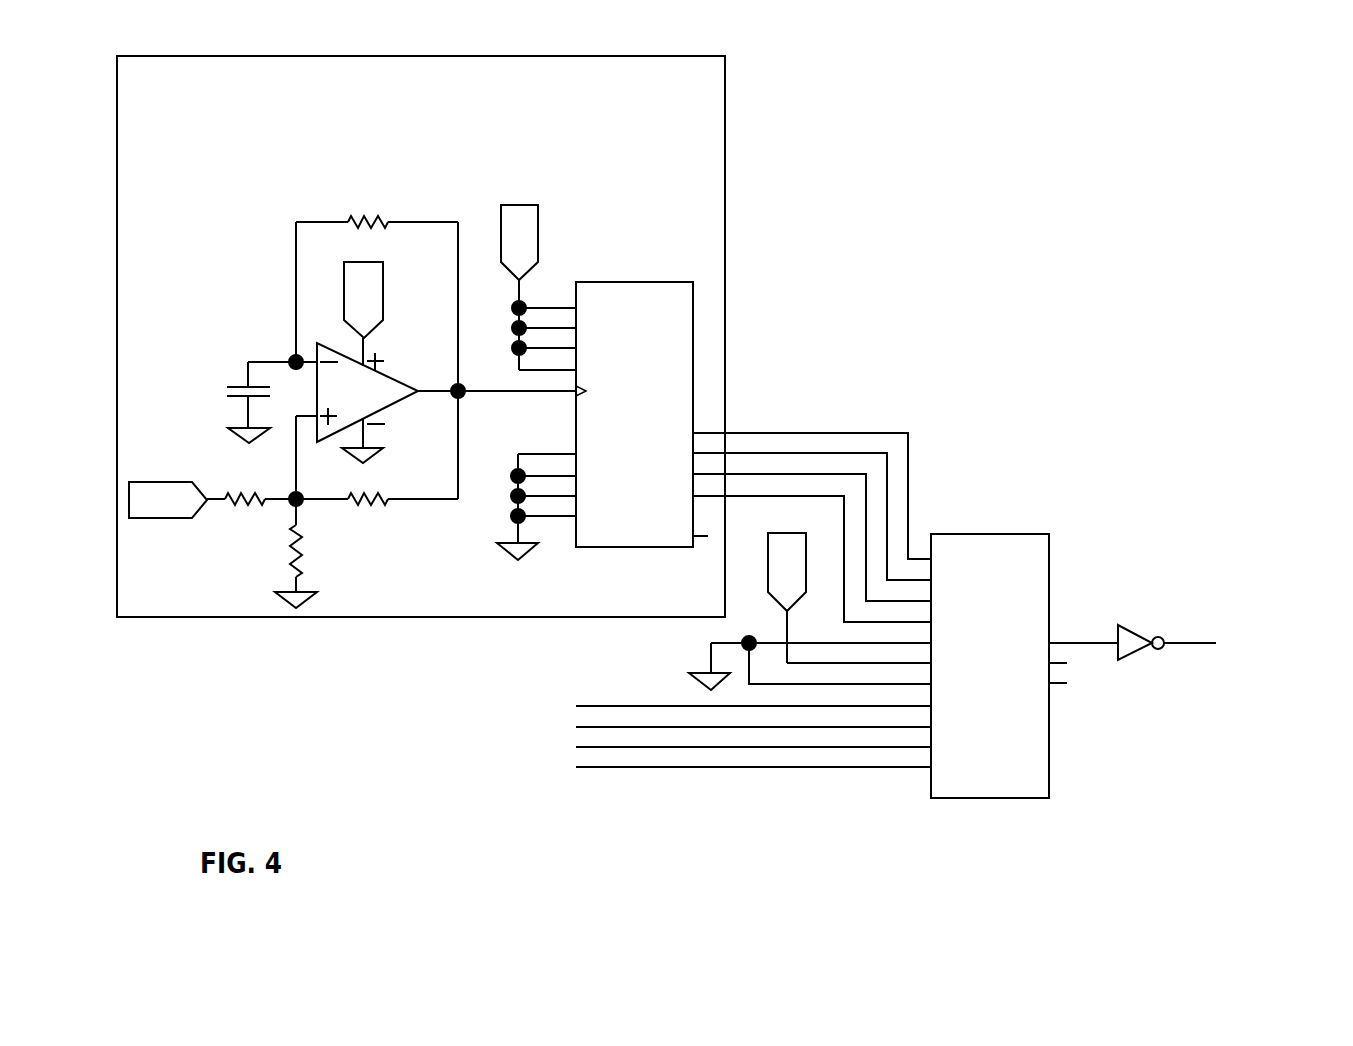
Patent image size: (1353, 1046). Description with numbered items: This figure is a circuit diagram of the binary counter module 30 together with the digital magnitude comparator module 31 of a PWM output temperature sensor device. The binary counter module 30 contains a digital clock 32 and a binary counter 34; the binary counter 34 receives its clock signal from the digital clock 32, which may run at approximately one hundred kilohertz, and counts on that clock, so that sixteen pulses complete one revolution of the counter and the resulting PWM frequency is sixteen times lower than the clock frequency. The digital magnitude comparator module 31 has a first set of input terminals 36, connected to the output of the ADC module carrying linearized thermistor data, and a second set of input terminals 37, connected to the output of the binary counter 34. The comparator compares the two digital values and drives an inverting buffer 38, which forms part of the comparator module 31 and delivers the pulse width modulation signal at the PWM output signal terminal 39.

The binary counter module 30 is at (557, 336).
The digital magnitude comparator module 31 is at (941, 564).
The digital clock 32 is at (352, 336).
The binary counter 34 is at (602, 310).
The first set of input terminals 36 is at (714, 792).
The second set of input terminals 37 is at (816, 471).
The inverting buffer 38 is at (1144, 717).
The PWM output signal terminal 39 is at (1256, 575).